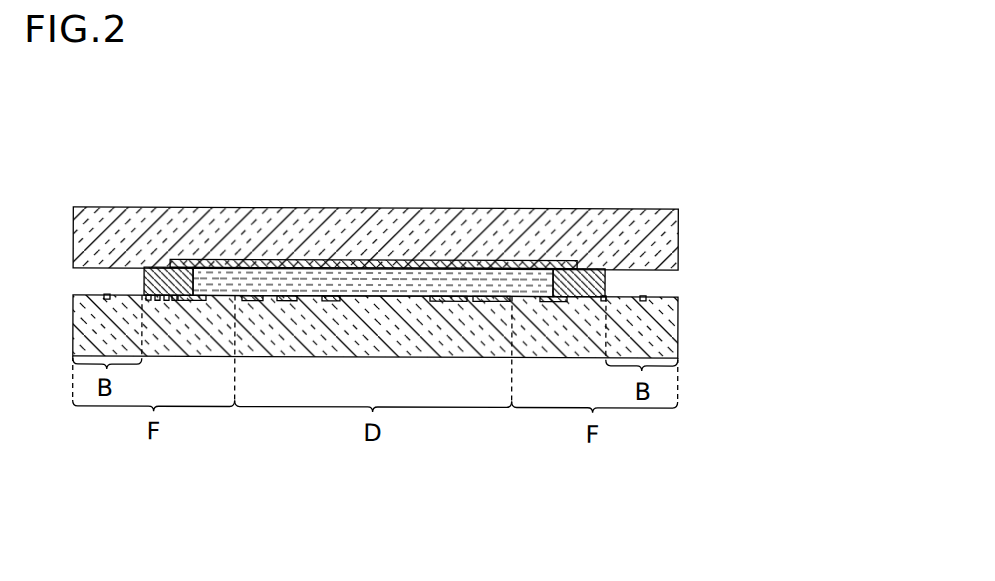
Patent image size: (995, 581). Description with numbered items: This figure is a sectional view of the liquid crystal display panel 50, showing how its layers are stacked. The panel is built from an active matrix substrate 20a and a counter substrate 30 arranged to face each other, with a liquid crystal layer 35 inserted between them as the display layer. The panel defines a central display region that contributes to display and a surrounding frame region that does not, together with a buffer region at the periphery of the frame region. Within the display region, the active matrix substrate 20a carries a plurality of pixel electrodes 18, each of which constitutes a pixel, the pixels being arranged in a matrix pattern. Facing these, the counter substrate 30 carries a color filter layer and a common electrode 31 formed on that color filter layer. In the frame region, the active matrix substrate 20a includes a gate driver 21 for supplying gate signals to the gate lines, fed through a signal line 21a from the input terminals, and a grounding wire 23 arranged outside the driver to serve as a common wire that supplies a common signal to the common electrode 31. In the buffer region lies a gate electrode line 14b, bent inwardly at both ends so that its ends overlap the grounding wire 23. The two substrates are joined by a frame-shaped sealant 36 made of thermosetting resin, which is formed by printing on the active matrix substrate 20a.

The liquid crystal display panel 50 is at (115, 137).
The counter substrate 30 is at (678, 246).
The active matrix substrate 20a is at (678, 333).
The gate driver 21 is at (205, 296).
The signal line 21a is at (160, 268).
The pixel electrode 18 is at (300, 296).
The liquid crystal layer 35 is at (383, 280).
The common electrode 31 is at (452, 264).
The sealant 36 is at (592, 284).
The gate electrode line 14b is at (106, 295).
The grounding wire 23 is at (145, 296).